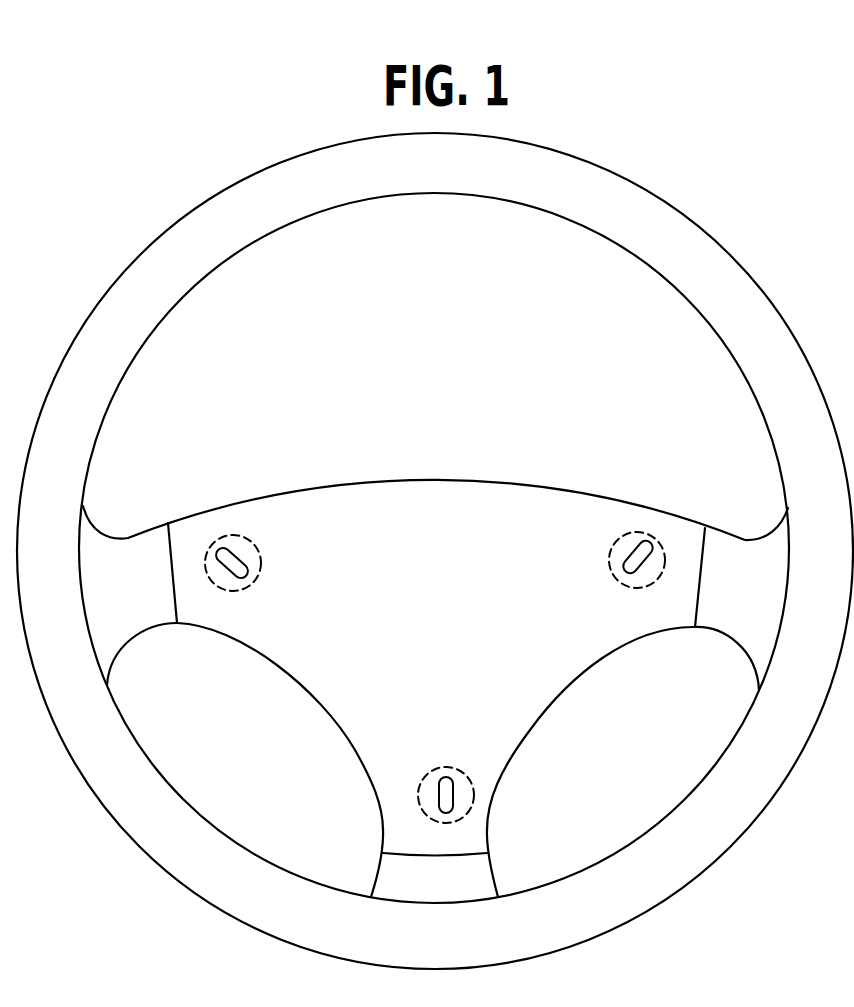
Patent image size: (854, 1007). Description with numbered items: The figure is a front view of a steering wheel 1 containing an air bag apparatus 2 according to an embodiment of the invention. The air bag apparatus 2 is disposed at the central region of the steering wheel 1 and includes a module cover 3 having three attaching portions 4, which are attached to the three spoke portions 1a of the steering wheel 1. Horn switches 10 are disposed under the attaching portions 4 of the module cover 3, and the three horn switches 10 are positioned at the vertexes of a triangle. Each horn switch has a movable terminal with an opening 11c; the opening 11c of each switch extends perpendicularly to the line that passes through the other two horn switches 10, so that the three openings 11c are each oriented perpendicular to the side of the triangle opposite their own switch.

The steering wheel 1 is at (745, 790).
The spoke portions 1a is at (123, 547).
The air bag apparatus 2 is at (560, 430).
The module cover 3 is at (410, 503).
The attaching portions 4 is at (185, 598).
The horn switches 10 is at (668, 475).
The opening 11c is at (261, 558).